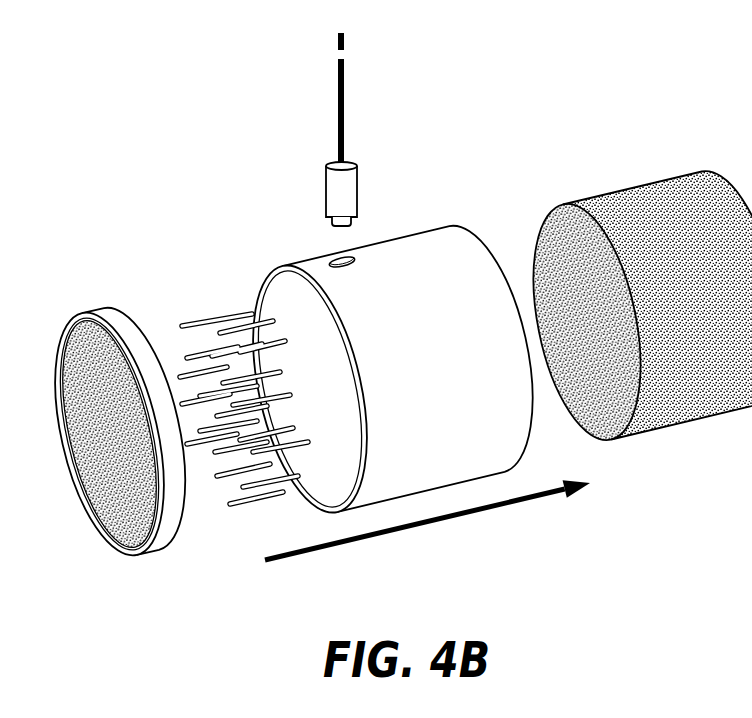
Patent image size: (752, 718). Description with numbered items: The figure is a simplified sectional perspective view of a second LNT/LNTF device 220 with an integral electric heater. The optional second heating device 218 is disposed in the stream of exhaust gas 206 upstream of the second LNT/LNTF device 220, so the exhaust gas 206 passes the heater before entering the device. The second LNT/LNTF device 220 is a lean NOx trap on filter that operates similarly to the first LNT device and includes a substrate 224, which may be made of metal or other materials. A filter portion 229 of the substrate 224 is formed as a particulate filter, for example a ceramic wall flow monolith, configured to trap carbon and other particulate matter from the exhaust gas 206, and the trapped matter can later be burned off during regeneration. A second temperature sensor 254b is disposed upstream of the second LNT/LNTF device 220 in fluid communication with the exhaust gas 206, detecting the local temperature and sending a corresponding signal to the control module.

The exhaust gas 206 is at (420, 528).
The second heating device 218 is at (94, 314).
The second LNT/LNTF device 220 is at (380, 296).
The substrate 224 is at (633, 188).
The filter portion 229 is at (580, 301).
The second temperature sensor 254b is at (326, 192).